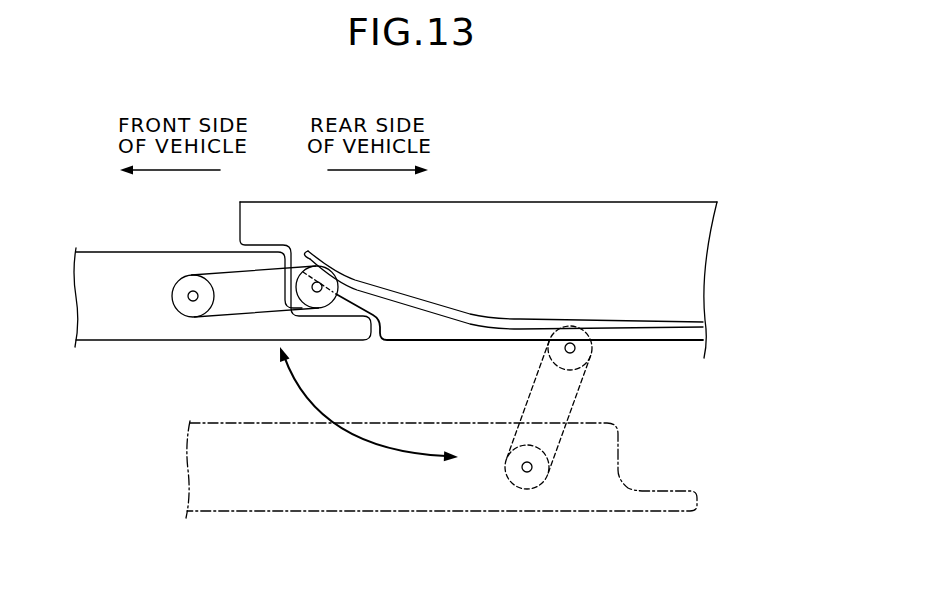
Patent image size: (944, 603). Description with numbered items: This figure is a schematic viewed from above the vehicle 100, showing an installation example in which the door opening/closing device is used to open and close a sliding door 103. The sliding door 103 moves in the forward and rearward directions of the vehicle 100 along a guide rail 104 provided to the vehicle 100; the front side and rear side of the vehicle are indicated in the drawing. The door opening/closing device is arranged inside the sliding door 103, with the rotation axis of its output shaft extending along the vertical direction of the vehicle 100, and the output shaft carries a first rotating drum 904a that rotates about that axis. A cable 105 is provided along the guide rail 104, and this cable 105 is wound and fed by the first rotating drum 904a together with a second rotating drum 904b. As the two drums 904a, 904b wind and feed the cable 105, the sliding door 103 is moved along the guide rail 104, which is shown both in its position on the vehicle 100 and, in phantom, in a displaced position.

The vehicle 100 is at (638, 203).
The sliding door 103 is at (95, 250).
The guide rail 104 is at (683, 333).
The cable 105 is at (632, 332).
The first rotating drum 904a is at (187, 306).
The second rotating drum 904b is at (293, 309).